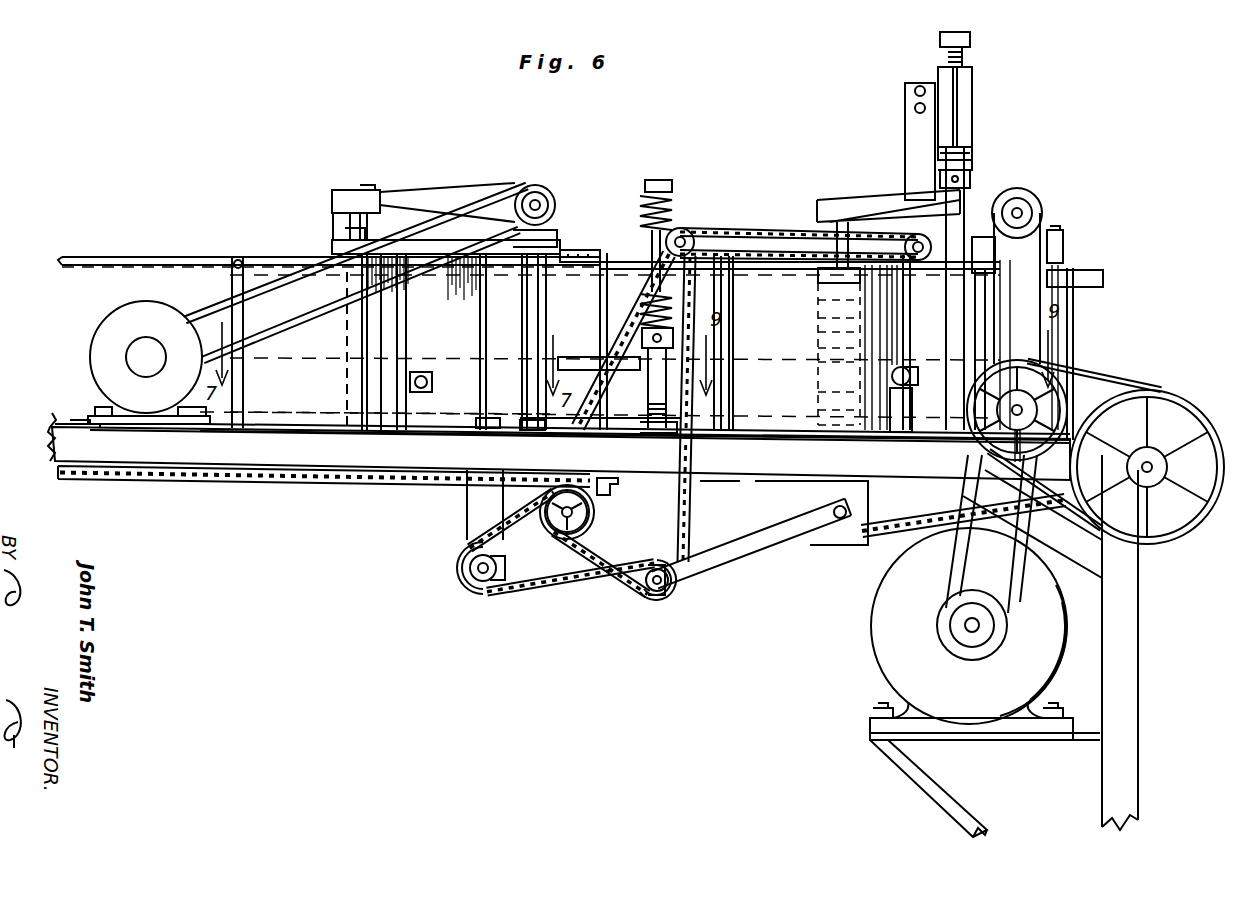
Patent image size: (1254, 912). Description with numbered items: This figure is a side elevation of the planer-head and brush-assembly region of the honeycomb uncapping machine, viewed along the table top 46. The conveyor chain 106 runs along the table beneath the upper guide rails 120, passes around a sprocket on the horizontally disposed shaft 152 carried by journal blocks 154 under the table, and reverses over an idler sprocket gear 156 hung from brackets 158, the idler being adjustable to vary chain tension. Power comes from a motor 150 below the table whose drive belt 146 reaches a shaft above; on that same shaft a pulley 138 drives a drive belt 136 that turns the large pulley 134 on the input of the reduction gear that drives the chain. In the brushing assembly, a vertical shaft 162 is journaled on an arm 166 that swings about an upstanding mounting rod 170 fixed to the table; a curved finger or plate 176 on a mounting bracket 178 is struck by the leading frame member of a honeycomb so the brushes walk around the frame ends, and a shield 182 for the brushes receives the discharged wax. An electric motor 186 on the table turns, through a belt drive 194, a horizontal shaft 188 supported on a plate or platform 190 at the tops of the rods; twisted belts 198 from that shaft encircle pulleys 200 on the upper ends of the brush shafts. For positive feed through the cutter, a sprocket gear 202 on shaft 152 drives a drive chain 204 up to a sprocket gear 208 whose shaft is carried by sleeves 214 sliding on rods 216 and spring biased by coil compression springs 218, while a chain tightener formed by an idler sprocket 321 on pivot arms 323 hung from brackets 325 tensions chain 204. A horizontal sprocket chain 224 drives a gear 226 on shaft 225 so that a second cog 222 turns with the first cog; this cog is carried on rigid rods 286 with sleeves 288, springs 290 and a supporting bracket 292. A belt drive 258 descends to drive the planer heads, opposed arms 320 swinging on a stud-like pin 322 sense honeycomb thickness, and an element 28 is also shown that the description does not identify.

The upper guide rails 120 is at (147, 257).
The belt drive 194 is at (272, 292).
The vertically disposed shaft 162 is at (350, 232).
The pulleys 200 is at (380, 195).
The twisted belts 198 is at (447, 194).
The horizontally disposed shaft 188 is at (538, 203).
The plate or platform 190 is at (590, 235).
The arm 166 is at (580, 262).
The vertically disposed sleeves 214 is at (655, 232).
The coil compression springs 218 is at (668, 190).
The sprocket gear 208 is at (688, 234).
The sprocket chain 224 is at (762, 228).
The gear 226 is at (922, 232).
The second cog 222 is at (908, 240).
The supporting bracket 292 is at (905, 125).
The sleeves 288 is at (962, 110).
The springs 290 is at (966, 162).
The upstanding rigid rods 286 is at (955, 198).
The shaft 225 is at (1030, 206).
The belt drive 258 is at (1046, 236).
The electric motor 186 is at (105, 338).
The table top 46 is at (56, 428).
The shield 182 is at (305, 390).
The curved finger or plate 176 is at (425, 375).
The mounting bracket 178 is at (486, 404).
The mounting rod 170 is at (541, 302).
The opposed arms 320 is at (568, 357).
The stud-like pin 322 is at (590, 357).
The vertically disposed rods 216 is at (658, 374).
The block 28 is at (893, 425).
The conveyor chain 106 is at (200, 488).
The brackets 158 is at (467, 515).
The journal blocks 154 is at (605, 488).
The horizontally disposed shaft 152 is at (586, 514).
The idler sprocket gear 156 is at (462, 575).
The sprocket gear 202 is at (516, 552).
The drive chain 204 is at (690, 526).
The idler sprocket 321 is at (645, 602).
The pivot arms 323 is at (702, 568).
The brackets 325 is at (818, 489).
The pulley 138 is at (990, 447).
The drive belt 136 is at (1084, 376).
The large pulley 134 is at (1157, 394).
The drive belt 146 is at (955, 576).
The motor 150 is at (880, 626).